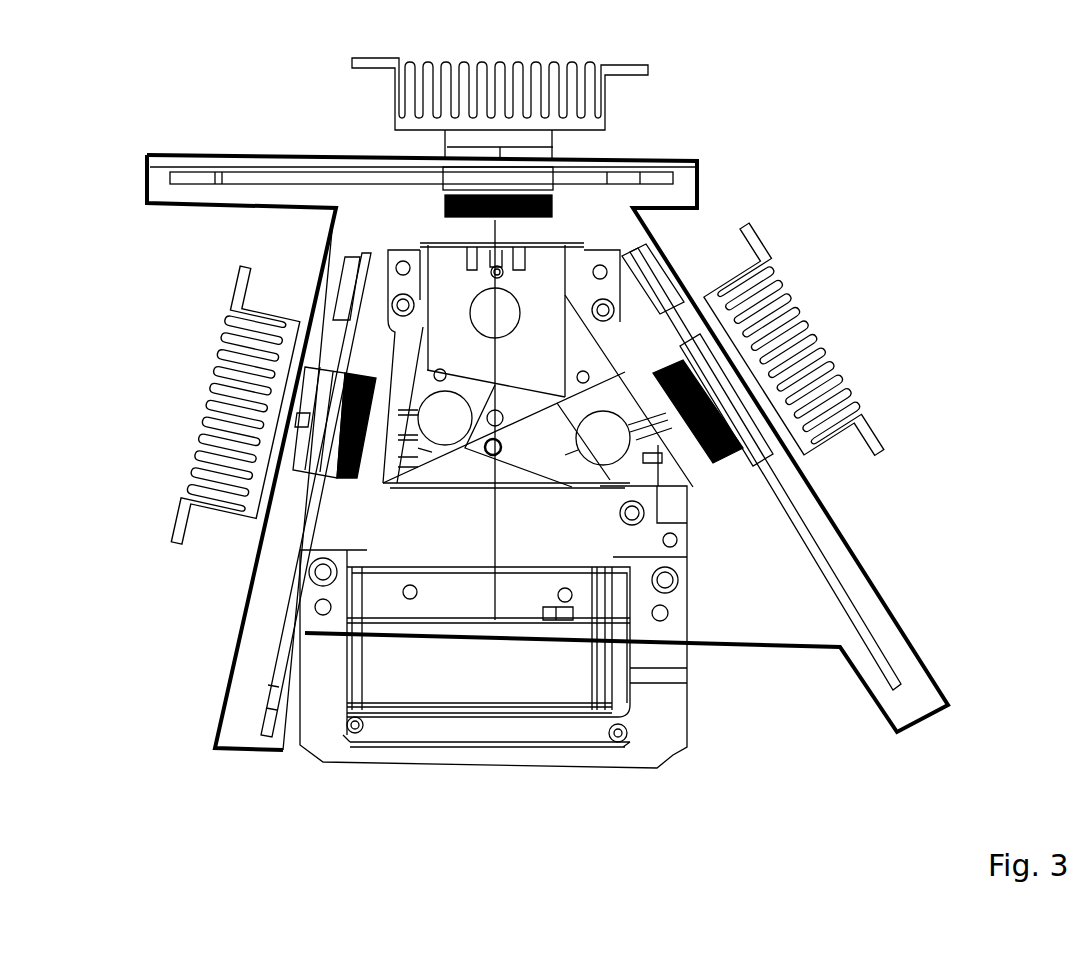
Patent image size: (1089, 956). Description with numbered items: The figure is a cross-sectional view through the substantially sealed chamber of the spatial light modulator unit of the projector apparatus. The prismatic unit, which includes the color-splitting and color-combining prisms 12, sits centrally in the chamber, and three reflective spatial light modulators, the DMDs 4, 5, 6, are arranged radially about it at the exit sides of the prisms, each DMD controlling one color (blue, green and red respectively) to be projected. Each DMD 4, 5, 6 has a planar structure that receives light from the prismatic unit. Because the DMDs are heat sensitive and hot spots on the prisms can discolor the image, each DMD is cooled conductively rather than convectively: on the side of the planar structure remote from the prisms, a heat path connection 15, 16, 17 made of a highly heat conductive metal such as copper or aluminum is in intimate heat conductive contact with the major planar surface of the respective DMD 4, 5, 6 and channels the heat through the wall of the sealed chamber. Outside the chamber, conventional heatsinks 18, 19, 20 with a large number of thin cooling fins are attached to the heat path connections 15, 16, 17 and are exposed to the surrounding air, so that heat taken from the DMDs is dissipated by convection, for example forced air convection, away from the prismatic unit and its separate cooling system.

The DMD 4 is at (723, 457).
The DMD 5 is at (553, 200).
The DMD 6 is at (345, 468).
The color-splitting/color-combining prisms 12 is at (425, 452).
The heat path connection 15 is at (730, 437).
The heat path connection 16 is at (455, 192).
The heat path connection 17 is at (332, 463).
The heatsink 18 is at (785, 305).
The heatsink 19 is at (585, 80).
The heatsink 20 is at (232, 378).